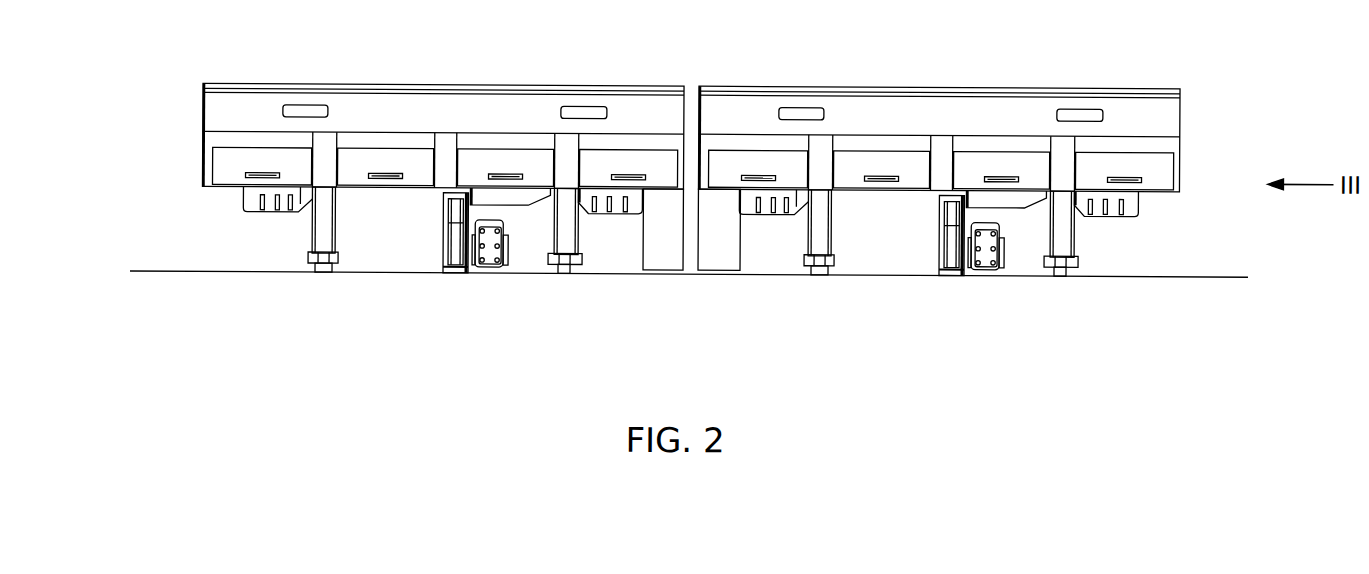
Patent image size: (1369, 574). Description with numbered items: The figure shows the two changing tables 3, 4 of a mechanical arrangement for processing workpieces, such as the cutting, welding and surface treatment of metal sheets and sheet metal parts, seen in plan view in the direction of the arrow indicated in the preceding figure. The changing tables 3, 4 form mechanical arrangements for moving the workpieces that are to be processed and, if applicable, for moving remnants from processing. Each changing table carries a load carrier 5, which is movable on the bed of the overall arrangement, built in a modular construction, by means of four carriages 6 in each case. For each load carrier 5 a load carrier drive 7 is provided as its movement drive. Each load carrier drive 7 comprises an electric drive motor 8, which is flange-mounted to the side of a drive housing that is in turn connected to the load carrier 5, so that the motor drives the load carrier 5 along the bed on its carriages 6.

The changing table 3 is at (968, 47).
The changing table 4 is at (528, 50).
The load carrier 5 is at (192, 100).
The carriage 6 is at (323, 271).
The load carrier drive 7 is at (438, 280).
The electric drive motor 8 is at (488, 250).